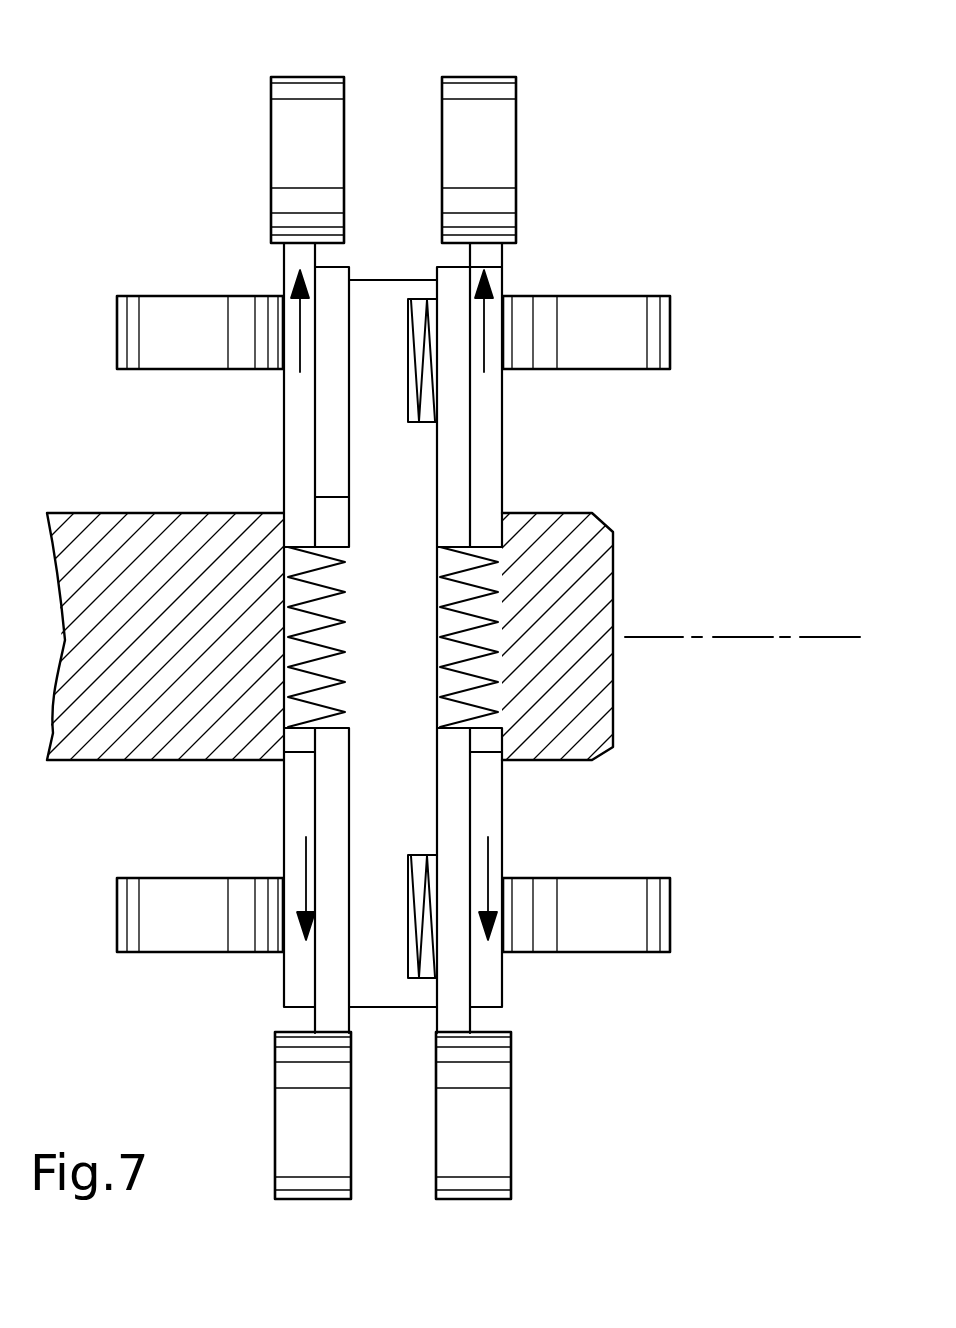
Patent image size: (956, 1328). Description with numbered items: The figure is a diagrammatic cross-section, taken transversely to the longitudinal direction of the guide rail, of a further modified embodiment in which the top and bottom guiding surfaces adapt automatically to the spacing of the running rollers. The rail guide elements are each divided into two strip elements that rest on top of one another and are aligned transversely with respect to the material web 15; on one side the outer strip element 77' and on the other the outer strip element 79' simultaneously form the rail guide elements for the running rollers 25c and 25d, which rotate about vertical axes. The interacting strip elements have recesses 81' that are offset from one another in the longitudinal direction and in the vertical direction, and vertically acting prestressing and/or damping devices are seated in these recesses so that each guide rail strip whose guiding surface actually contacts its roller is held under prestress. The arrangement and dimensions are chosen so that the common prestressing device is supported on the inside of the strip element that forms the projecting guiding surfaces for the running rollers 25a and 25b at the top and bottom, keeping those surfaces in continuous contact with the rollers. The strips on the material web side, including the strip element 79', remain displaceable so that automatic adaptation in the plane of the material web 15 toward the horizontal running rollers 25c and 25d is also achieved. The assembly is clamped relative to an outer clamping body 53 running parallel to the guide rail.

The running roller 25a is at (452, 122).
The running roller 25b is at (453, 1098).
The running roller 25c is at (152, 312).
The running roller 25d is at (625, 312).
The strip element 77' is at (267, 407).
The strip element 79' is at (517, 638).
The recess 81' is at (257, 790).
The outer clamping body 53 is at (558, 565).
The material web 15 is at (682, 638).